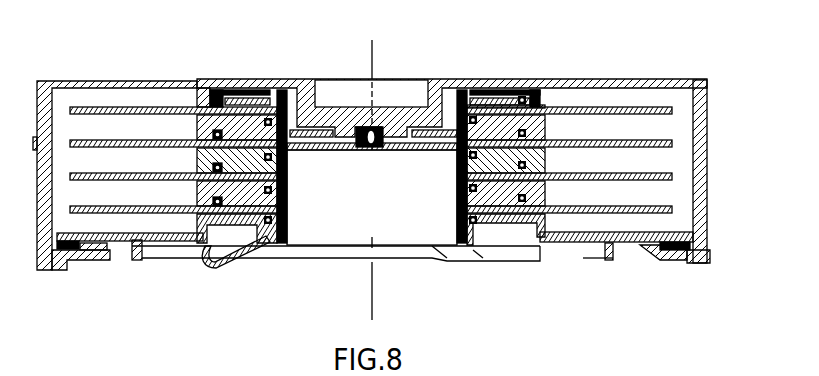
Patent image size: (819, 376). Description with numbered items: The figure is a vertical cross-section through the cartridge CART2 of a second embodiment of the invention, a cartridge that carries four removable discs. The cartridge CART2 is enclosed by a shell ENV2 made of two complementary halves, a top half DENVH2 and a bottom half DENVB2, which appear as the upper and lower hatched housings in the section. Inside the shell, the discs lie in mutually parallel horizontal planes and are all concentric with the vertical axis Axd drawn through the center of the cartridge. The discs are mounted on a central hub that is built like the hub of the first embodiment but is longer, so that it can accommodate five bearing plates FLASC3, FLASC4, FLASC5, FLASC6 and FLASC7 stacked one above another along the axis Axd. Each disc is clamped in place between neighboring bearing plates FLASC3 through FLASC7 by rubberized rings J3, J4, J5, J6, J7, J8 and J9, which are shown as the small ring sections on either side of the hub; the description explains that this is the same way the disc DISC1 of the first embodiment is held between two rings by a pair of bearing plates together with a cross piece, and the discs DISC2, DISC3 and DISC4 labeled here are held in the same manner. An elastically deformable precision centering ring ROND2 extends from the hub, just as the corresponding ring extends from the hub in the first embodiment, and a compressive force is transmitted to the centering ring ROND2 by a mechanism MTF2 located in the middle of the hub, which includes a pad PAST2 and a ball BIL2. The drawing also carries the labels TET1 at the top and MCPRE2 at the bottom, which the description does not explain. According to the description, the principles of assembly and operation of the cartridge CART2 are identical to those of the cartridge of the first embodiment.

The top half of shell DENVH2 is at (136, 81).
The bottom half of shell DENVB2 is at (36, 270).
The shell ENV2 is at (231, 71).
The head TET1 is at (314, 7).
The axis Axd is at (372, 53).
The cartridge CART2 is at (632, 63).
The bearing plate FLASC3 is at (546, 99).
The bearing plate FLASC4 is at (546, 127).
The bearing plate FLASC5 is at (546, 160).
The bearing plate FLASC6 is at (546, 193).
The bearing plate FLASC7 is at (546, 228).
The disc DISC1 is at (672, 111).
The disc DISC2 is at (672, 144).
The disc DISC3 is at (672, 177).
The disc DISC4 is at (672, 211).
The rubberized ring J3 is at (288, 152).
The rubberized ring J4 is at (212, 134).
The rubberized ring J5 is at (288, 172).
The rubberized ring J6 is at (212, 166).
The rubberized ring J7 is at (288, 192).
The rubberized ring J8 is at (212, 200).
The rubberized ring J9 is at (288, 212).
The mechanism MTF2 is at (400, 162).
The pad PAST2 is at (371, 147).
The ball BIL2 is at (372, 181).
The elastically deformable precision centering ring ROND2 is at (207, 266).
The pressing member MCPRE2 is at (610, 262).